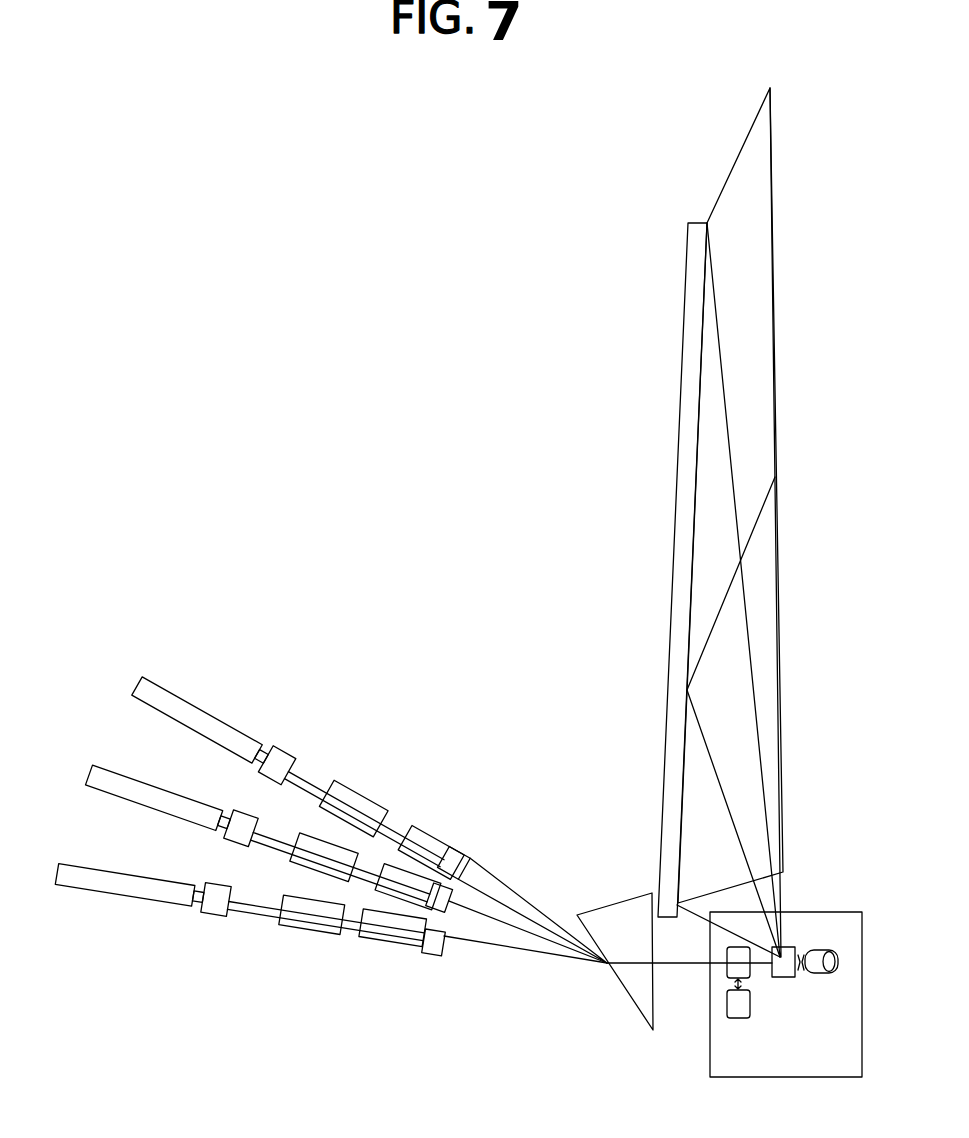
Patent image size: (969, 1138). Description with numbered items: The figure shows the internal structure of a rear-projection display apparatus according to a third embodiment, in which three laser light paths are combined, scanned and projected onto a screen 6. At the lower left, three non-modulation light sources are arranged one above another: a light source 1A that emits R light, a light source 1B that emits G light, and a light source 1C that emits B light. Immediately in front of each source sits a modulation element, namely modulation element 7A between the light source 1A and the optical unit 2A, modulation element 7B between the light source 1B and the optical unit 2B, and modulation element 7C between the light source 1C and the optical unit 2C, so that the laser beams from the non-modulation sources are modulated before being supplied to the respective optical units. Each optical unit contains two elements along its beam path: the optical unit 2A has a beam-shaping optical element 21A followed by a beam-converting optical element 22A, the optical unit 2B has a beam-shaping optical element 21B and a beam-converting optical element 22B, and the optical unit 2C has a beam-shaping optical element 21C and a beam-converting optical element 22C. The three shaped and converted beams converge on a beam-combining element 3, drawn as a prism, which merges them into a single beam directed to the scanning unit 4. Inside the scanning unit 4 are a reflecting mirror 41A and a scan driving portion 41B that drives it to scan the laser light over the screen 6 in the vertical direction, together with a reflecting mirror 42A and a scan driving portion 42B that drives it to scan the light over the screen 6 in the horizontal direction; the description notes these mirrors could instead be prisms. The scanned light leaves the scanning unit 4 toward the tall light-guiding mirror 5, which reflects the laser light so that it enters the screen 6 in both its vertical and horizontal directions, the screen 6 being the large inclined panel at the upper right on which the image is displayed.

The light source 1A is at (215, 717).
The light source 1B is at (127, 776).
The light source 1C is at (129, 870).
The modulation element 7A is at (293, 752).
The modulation element 7B is at (245, 818).
The modulation element 7C is at (214, 918).
The beam-shaping optical element 21A is at (364, 800).
The beam-shaping optical element 21B is at (300, 872).
The beam-shaping optical element 21C is at (318, 928).
The beam-converting optical element 22A is at (426, 838).
The beam-converting optical element 22B is at (436, 908).
The beam-converting optical element 22C is at (386, 946).
The optical unit 2A is at (471, 862).
The optical unit 2B is at (450, 893).
The optical unit 2C is at (432, 958).
The beam-combining element 3 is at (620, 903).
The scanning unit 4 is at (786, 973).
The reflecting mirror 41A is at (753, 978).
The scan driving portion 41B is at (742, 1018).
The reflecting mirror 42A is at (797, 945).
The scan driving portion 42B is at (813, 975).
The light-guiding mirror 5 is at (685, 403).
The screen 6 is at (777, 400).